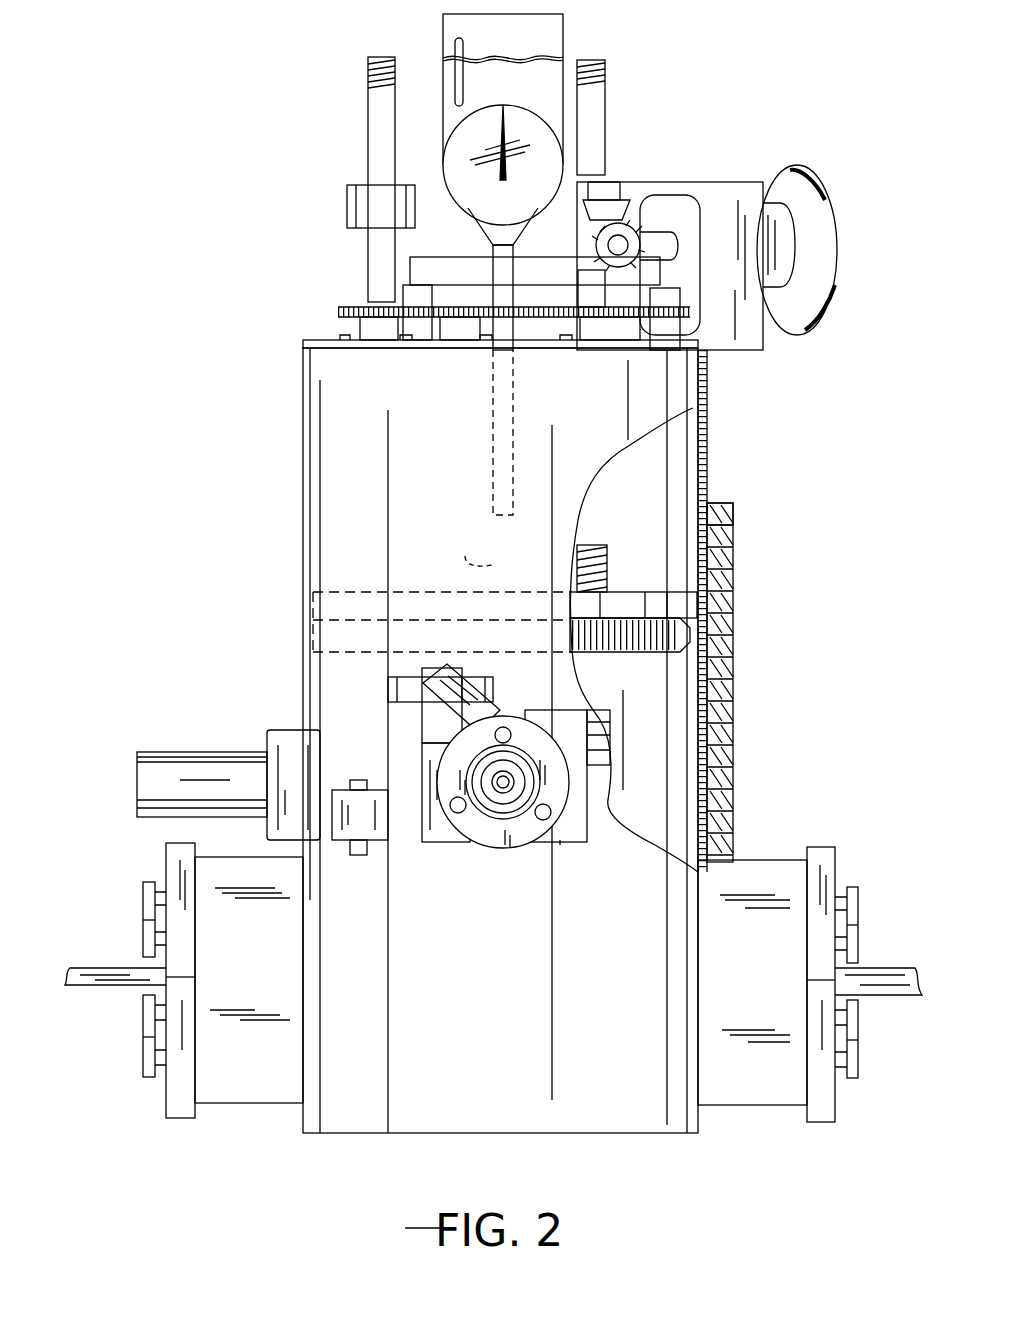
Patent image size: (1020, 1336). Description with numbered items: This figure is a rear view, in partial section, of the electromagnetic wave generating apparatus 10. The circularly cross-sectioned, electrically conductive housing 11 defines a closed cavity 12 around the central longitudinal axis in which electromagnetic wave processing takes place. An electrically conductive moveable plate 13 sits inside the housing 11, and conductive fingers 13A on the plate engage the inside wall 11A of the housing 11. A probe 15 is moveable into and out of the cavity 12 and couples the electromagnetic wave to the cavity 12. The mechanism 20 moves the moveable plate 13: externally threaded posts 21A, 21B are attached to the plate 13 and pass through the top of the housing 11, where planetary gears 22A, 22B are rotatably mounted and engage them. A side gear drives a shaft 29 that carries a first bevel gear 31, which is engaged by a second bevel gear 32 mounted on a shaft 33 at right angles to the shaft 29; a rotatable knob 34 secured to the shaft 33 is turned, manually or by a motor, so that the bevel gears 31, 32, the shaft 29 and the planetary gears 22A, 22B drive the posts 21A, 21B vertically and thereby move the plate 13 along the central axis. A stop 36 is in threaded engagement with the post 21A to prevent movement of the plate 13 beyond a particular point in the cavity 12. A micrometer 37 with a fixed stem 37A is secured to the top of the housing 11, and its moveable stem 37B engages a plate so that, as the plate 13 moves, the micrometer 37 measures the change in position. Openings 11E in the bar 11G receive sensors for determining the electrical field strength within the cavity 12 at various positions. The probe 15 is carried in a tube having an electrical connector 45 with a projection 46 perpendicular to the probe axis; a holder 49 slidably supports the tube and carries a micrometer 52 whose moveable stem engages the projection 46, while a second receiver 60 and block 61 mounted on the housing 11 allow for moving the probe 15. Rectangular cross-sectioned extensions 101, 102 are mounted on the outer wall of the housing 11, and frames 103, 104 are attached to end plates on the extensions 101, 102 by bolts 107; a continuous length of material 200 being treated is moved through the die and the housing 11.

The electromagnetic wave generating apparatus 10 is at (247, 591).
The housing 11 is at (488, 1125).
The inside wall 11A is at (688, 742).
The openings 11E is at (735, 530).
The bar 11G is at (718, 505).
The cavity 12 is at (650, 718).
The moveable plate 13 is at (665, 610).
The conductive fingers 13A is at (690, 630).
The probe 15 is at (500, 795).
The mechanism 20 is at (714, 118).
The externally threaded post 21A is at (375, 95).
The externally threaded post 21B is at (600, 112).
The planetary gear 22A is at (348, 305).
The planetary gear 22B is at (735, 611).
The shaft 29 is at (623, 223).
The first bevel gear 31 is at (603, 200).
The second bevel gear 32 is at (655, 270).
The shaft 33 is at (688, 198).
The rotatable knob 34 is at (790, 172).
The stop 36 is at (360, 205).
The micrometer 37 is at (525, 30).
The fixed stem 37A is at (513, 352).
The moveable stem 37B is at (443, 588).
The electrical connector 45 is at (528, 832).
The projection 46 is at (475, 722).
The holder 49 is at (430, 757).
The micrometer 52 is at (395, 690).
The second receiver 60 is at (200, 752).
The block 61 is at (285, 735).
The extension 101 is at (769, 979).
The extension 102 is at (262, 975).
The frame 103 is at (838, 858).
The frame 104 is at (168, 868).
The bolts 107 is at (143, 945).
The continuous length of material 200 is at (88, 955).